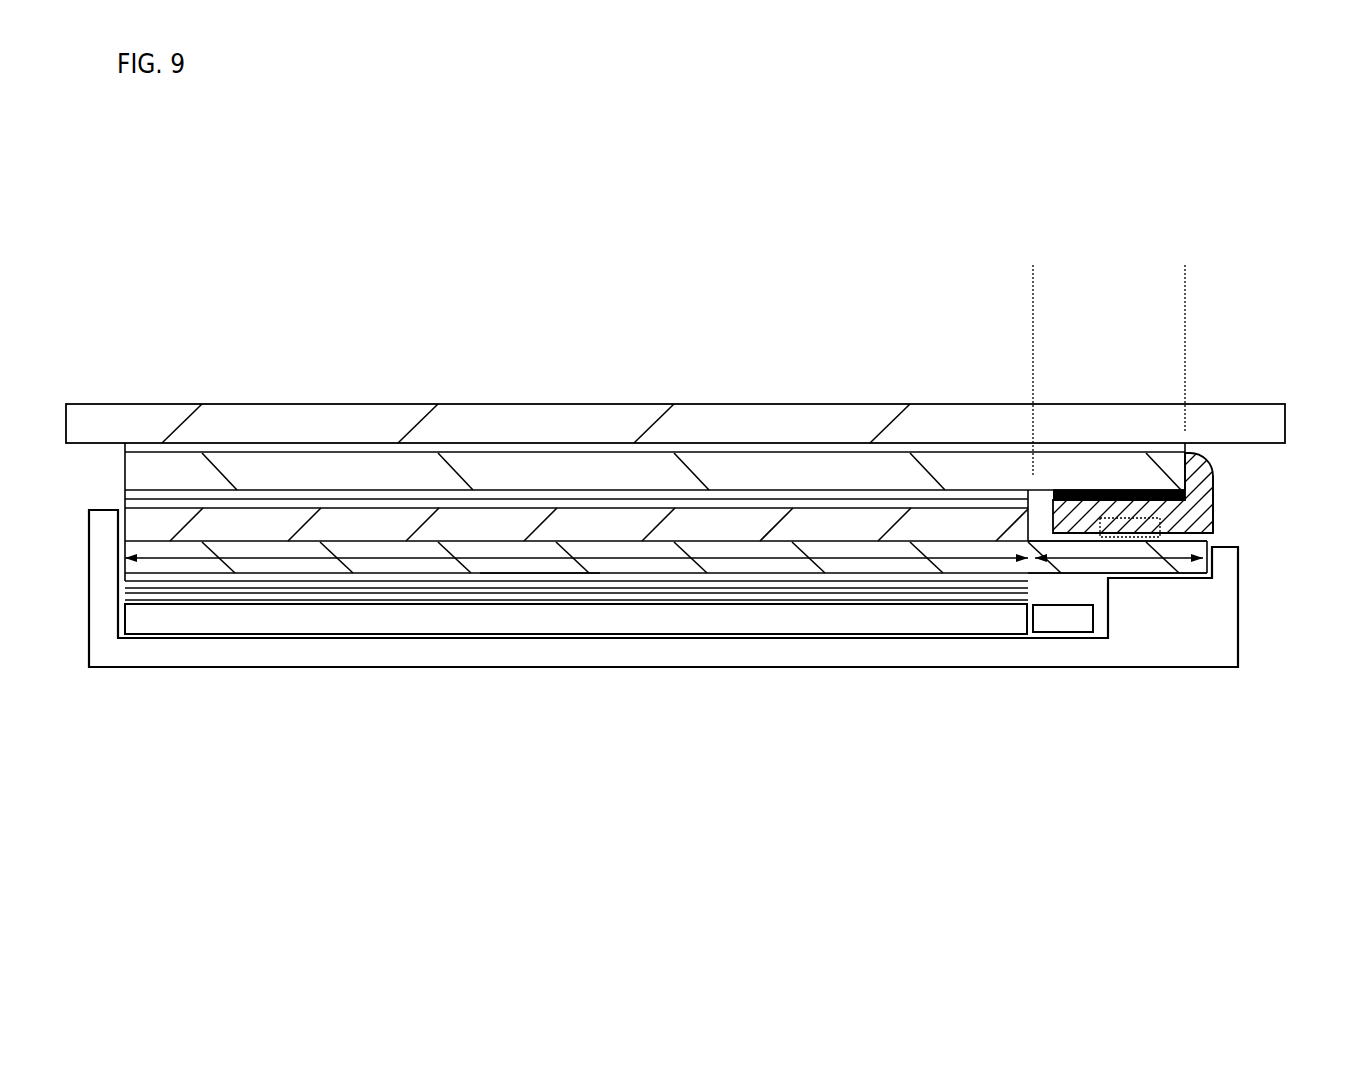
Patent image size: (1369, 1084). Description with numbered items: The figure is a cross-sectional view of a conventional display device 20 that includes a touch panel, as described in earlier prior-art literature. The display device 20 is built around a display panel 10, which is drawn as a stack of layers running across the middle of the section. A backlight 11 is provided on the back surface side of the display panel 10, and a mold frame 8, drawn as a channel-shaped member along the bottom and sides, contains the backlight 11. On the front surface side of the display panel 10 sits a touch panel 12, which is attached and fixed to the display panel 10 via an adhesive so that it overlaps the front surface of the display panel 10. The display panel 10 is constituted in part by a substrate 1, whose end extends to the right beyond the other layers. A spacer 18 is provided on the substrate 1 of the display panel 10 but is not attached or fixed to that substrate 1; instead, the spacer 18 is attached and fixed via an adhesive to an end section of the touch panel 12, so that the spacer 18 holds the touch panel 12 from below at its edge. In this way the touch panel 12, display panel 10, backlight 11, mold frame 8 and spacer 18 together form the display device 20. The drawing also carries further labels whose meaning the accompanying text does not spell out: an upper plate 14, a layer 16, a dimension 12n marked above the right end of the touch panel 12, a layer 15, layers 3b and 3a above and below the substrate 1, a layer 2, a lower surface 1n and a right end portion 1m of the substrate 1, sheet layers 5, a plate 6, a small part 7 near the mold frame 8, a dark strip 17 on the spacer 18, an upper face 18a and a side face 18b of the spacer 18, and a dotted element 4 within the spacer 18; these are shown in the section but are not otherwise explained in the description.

The display device 20 is at (135, 381).
The cover plate 14 is at (707, 422).
The adhesive layer 16 is at (933, 447).
The touch panel 12 is at (813, 475).
The non-display region width 12n is at (1033, 270).
The upper polarizer 15 is at (988, 490).
The upper substrate 3b is at (290, 503).
The display panel 10 is at (666, 508).
The counter substrate 2 is at (567, 527).
The substrate 1 is at (492, 550).
The lower surface of substrate 1n is at (537, 573).
The protruding end portion of substrate 1m is at (1170, 558).
The lower polarizer 3a is at (430, 575).
The optical sheets 5 is at (778, 585).
The light guide plate 6 is at (825, 613).
The light source 7 is at (1068, 615).
The mold frame 8 is at (628, 645).
The backlight 11 is at (882, 647).
The light shielding tape 17 is at (1108, 492).
The spacer 18 is at (1220, 478).
The upper surface of sealing member 18a is at (1073, 490).
The side surface of sealing member 18b is at (1213, 502).
The driver IC 4 is at (1132, 515).